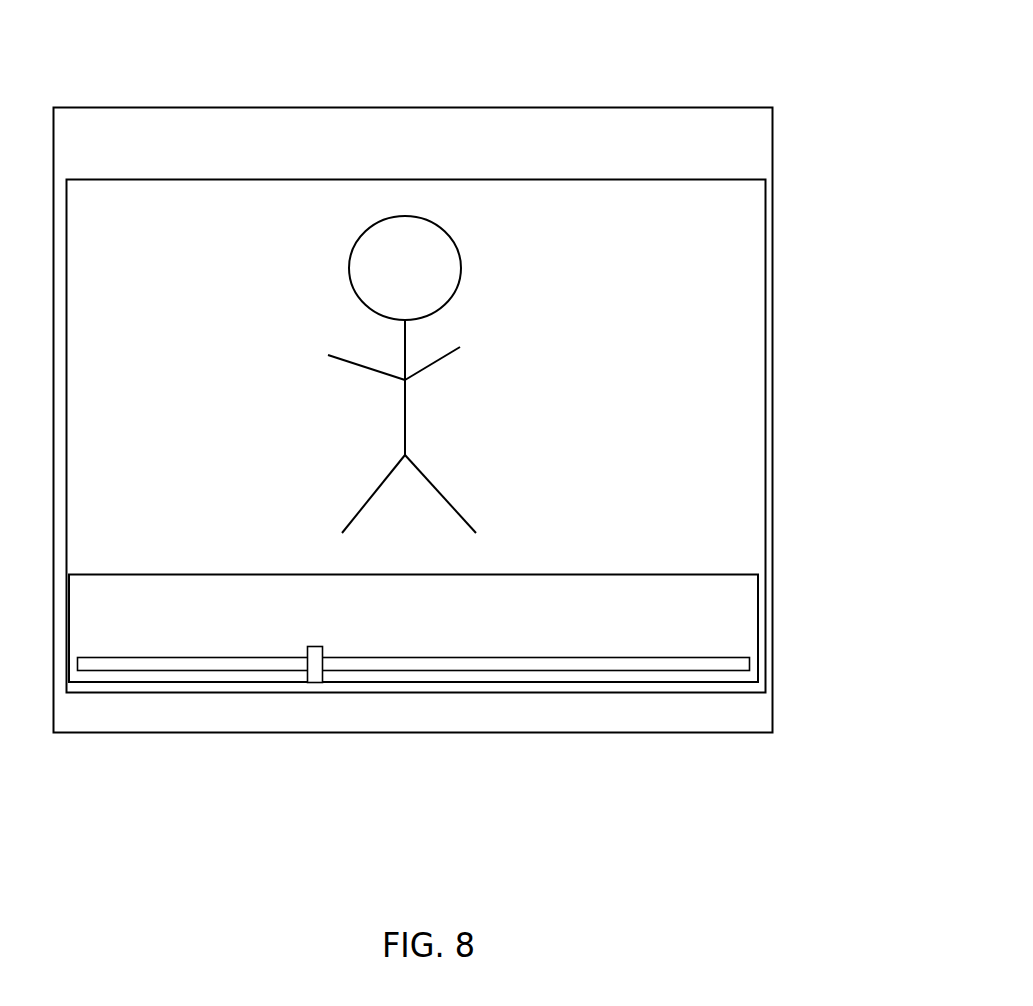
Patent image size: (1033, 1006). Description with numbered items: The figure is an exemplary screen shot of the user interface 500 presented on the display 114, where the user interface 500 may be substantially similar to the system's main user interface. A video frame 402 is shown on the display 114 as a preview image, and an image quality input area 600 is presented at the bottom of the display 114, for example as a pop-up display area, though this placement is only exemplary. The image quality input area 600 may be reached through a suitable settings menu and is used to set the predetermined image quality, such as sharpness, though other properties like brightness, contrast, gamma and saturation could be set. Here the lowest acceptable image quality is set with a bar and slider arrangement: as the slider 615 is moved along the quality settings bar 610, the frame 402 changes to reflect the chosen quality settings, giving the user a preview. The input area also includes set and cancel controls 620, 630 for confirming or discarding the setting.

The display 114 is at (108, 100).
The user interface 500 is at (586, 274).
The frame 402 is at (710, 358).
The image quality input area 600 is at (716, 626).
The quality settings bar 610 is at (466, 683).
The slider 615 is at (308, 684).
The Set button 620 is at (98, 723).
The Cancel button 630 is at (735, 723).